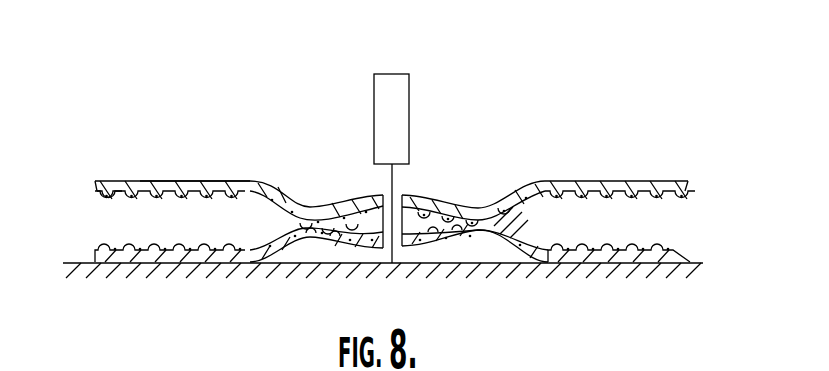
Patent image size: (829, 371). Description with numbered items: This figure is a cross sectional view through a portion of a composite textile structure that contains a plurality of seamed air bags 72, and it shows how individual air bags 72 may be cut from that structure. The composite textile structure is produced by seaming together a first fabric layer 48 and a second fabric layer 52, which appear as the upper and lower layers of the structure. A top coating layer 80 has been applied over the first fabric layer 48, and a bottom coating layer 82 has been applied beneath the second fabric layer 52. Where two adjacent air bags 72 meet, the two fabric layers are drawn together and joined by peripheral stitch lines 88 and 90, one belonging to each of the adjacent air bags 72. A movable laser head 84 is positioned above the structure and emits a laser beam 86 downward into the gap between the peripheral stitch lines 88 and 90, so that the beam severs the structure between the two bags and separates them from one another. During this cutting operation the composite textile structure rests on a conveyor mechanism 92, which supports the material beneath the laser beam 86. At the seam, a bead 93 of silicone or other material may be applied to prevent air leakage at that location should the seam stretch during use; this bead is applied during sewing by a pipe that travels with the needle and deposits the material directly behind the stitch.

The air bags 72 is at (118, 169).
The top coating layer 80 is at (208, 182).
The first fabric layer 48 is at (100, 200).
The second fabric layer 52 is at (125, 244).
The bottom coating layer 82 is at (277, 255).
The peripheral stitch line 88 is at (308, 207).
The peripheral stitch line 90 is at (478, 207).
The bead 93 is at (538, 217).
The movable laser head 84 is at (409, 111).
The laser beam 86 is at (393, 185).
The conveyor mechanism 92 is at (703, 263).